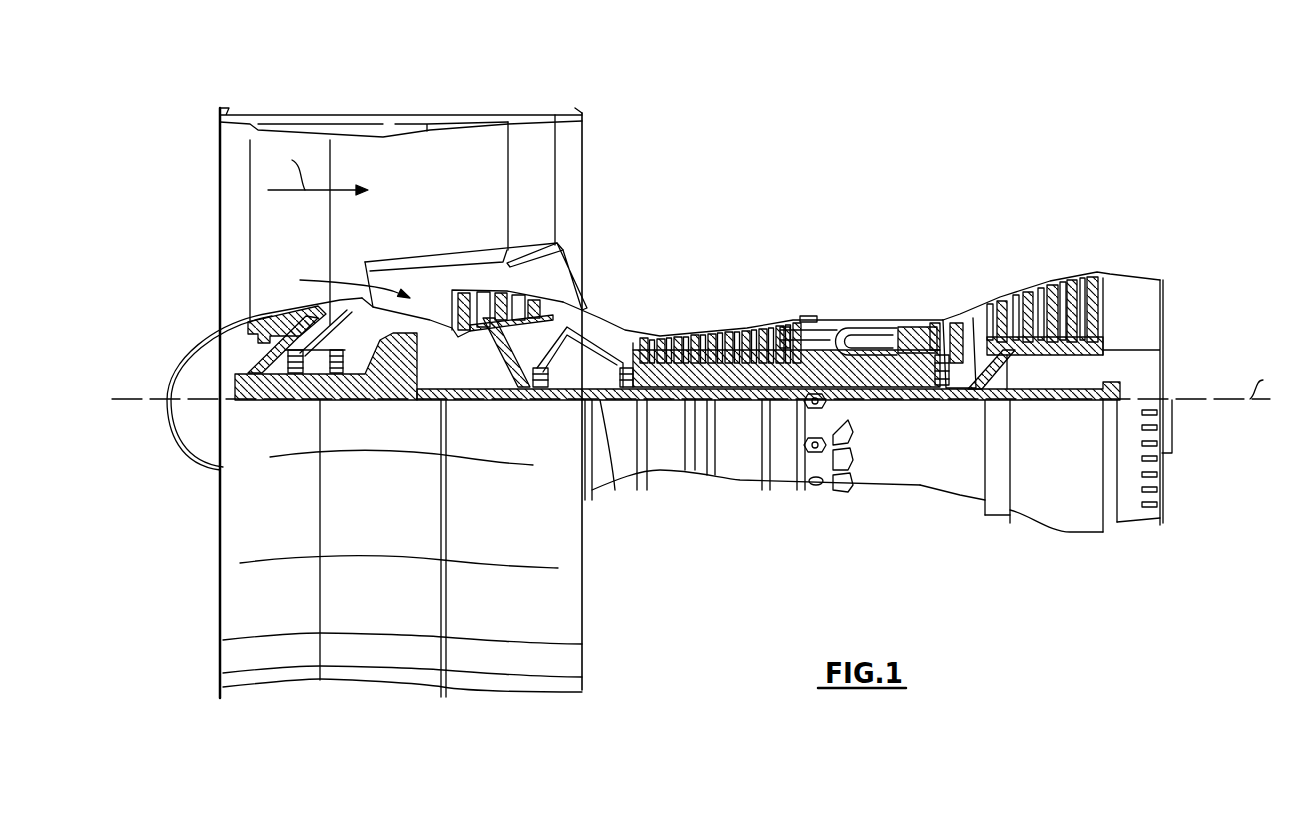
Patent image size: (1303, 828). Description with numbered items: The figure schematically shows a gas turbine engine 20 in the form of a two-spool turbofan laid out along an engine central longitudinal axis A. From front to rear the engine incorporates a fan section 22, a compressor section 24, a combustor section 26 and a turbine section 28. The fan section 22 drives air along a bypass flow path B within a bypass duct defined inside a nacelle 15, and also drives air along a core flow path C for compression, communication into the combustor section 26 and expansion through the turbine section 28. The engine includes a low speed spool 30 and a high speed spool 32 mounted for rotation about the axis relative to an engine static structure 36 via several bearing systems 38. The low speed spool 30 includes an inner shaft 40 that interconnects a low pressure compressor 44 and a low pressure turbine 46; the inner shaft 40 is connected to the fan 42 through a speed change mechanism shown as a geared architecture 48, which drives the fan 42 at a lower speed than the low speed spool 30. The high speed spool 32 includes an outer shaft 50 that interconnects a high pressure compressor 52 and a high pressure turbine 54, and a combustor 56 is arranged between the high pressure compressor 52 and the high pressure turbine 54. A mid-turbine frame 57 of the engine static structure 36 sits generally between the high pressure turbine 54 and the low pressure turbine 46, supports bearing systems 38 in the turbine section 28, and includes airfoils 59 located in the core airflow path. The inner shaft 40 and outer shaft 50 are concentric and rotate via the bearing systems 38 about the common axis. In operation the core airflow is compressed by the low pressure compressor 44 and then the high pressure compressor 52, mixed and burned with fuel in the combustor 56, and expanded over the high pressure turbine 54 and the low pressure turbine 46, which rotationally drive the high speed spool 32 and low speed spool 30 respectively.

The nacelle 15 is at (401, 118).
The gas turbine engine 20 is at (866, 159).
The fan section 22 is at (374, 369).
The compressor section 24 is at (753, 319).
The combustor section 26 is at (858, 295).
The turbine section 28 is at (1045, 360).
The low speed spool 30 is at (742, 415).
The high speed spool 32 is at (785, 338).
The engine static structure 36 is at (782, 499).
The bearing systems 38 is at (541, 386).
The inner shaft 40 is at (600, 400).
The fan 42 is at (304, 245).
The low pressure compressor 44 is at (509, 305).
The low pressure turbine 46 is at (1047, 290).
The geared architecture 48 is at (410, 385).
The outer shaft 50 is at (865, 399).
The high pressure compressor 52 is at (701, 337).
The high pressure turbine 54 is at (918, 292).
The combustor 56 is at (857, 335).
The mid-turbine frame 57 is at (966, 298).
The airfoils 59 is at (993, 362).